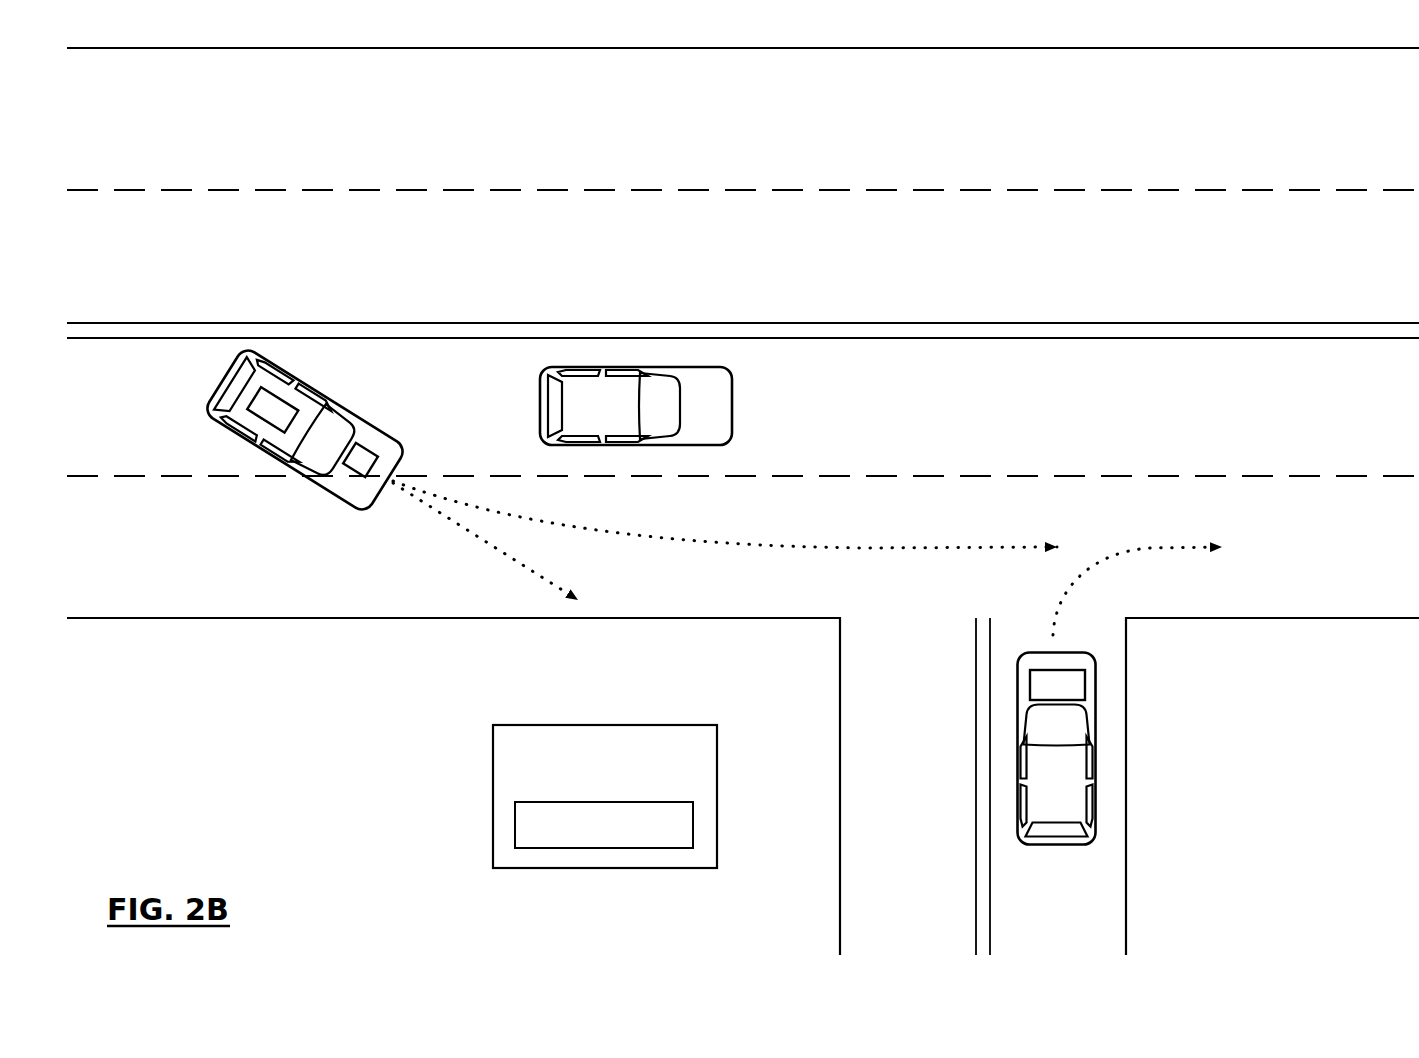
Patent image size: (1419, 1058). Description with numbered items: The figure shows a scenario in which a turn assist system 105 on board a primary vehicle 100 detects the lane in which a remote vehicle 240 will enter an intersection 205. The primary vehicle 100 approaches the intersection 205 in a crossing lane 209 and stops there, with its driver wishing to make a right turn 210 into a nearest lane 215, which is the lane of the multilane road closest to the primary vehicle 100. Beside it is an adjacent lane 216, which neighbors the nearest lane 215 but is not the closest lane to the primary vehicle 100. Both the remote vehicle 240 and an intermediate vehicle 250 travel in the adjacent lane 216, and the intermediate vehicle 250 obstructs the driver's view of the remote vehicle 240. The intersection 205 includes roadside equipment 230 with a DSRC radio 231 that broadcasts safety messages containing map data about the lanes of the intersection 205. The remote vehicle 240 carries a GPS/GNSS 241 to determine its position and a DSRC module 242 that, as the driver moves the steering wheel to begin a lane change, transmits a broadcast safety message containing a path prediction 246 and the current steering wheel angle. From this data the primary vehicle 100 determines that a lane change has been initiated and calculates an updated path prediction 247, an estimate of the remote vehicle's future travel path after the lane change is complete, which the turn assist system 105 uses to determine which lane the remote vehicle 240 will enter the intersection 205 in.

The primary vehicle 100 is at (1020, 725).
The turn assist system 105 is at (1085, 685).
The intersection 205 is at (1156, 641).
The crossing lane 209 is at (1058, 922).
The right turn 210 is at (1150, 547).
The nearest lane 215 is at (1297, 545).
The adjacent lane 216 is at (1297, 411).
The roadside equipment 230 is at (548, 725).
The DSRC radio 231 is at (694, 823).
The remote vehicle 240 is at (207, 410).
The GPS/GNSS 241 is at (253, 398).
The DSRC module 242 is at (371, 440).
The path prediction 246 is at (483, 538).
The updated path prediction 247 is at (867, 542).
The intermediate vehicle 250 is at (734, 395).